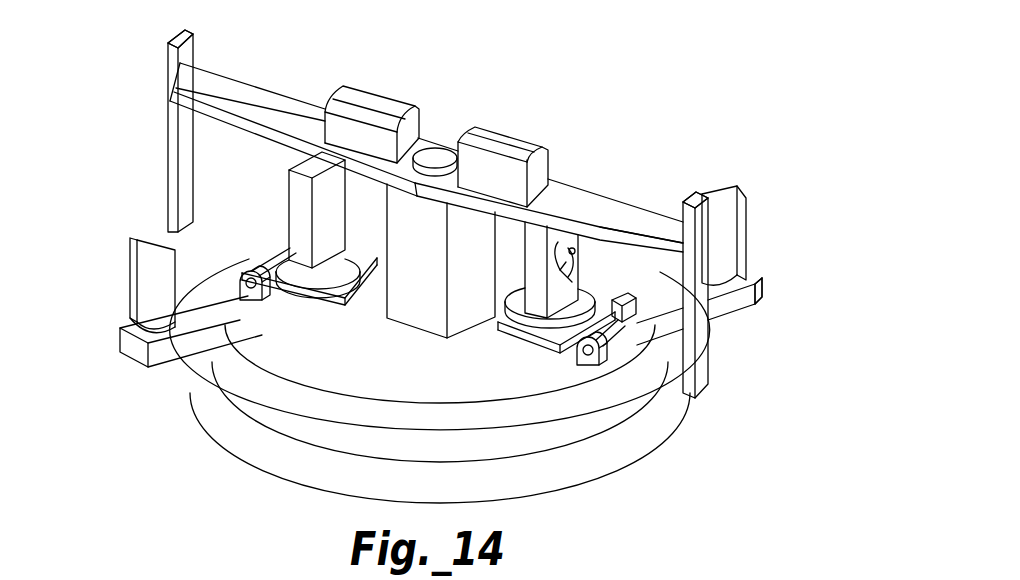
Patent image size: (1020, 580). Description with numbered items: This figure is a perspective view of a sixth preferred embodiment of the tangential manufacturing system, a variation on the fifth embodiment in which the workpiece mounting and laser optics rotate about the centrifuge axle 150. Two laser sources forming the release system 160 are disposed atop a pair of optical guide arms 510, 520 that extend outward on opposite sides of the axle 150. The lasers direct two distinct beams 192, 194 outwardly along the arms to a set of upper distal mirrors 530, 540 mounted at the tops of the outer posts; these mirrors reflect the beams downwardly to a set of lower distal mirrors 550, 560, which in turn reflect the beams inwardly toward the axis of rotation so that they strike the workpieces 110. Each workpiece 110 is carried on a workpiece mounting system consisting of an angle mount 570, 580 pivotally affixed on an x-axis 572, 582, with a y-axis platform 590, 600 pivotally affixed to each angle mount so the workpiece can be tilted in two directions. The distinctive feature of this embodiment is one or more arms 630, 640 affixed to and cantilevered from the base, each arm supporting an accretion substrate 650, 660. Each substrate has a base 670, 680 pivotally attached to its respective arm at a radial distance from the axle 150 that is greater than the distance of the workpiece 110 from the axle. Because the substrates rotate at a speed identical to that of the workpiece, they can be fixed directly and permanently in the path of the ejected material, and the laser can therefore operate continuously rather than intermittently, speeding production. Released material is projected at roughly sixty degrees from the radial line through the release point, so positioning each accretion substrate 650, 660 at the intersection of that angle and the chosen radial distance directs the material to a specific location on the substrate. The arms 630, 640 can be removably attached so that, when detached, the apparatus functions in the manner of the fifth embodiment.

The workpiece 110 is at (303, 220).
The axle 150 is at (440, 157).
The release system 160 is at (358, 95).
The first laser beam 192 is at (247, 82).
The second laser beam 194 is at (645, 208).
The first optical guide arm 510 is at (217, 87).
The second optical guide arm 520 is at (595, 210).
The first upper distal mirror 530 is at (167, 43).
The second upper distal mirror 540 is at (697, 226).
The first lower distal mirror 550 is at (172, 168).
The second lower distal mirror 560 is at (707, 333).
The first angle mount 570 is at (252, 289).
The x-axis 572 is at (222, 327).
The second angle mount 580 is at (517, 335).
The x-axis 582 is at (577, 362).
The first y-axis platform 590 is at (323, 282).
The second y-axis platform 600 is at (573, 310).
The first arm 630 is at (143, 357).
The second arm 640 is at (727, 307).
The first accretion substrate 650 is at (137, 272).
The second accretion substrate 660 is at (727, 198).
The substrate base 670 is at (137, 333).
The substrate base 680 is at (749, 283).